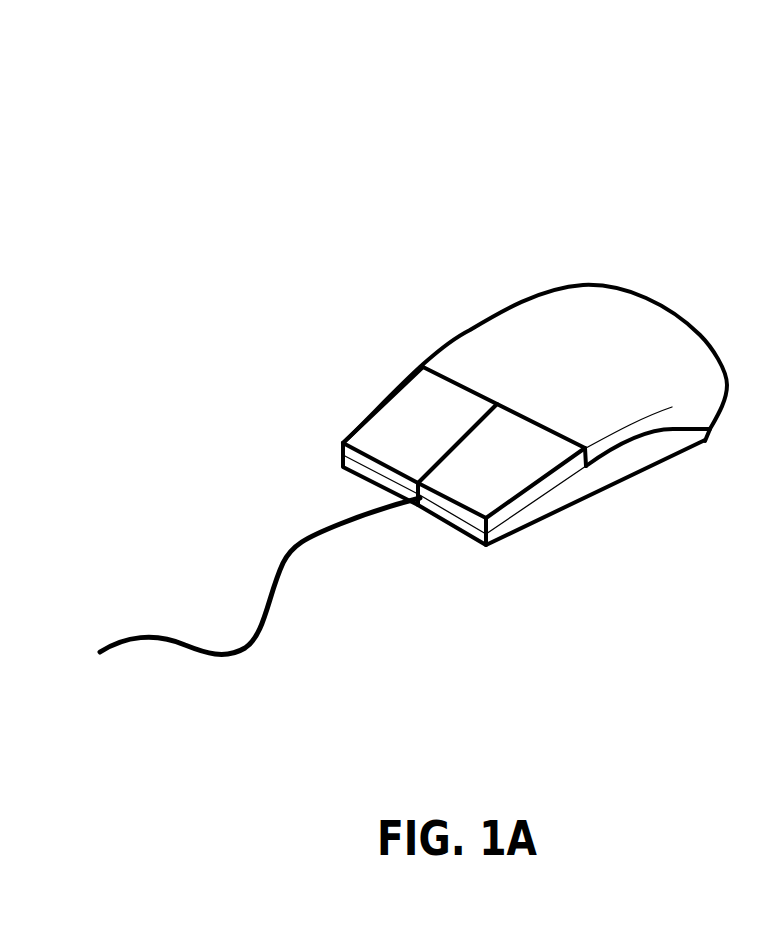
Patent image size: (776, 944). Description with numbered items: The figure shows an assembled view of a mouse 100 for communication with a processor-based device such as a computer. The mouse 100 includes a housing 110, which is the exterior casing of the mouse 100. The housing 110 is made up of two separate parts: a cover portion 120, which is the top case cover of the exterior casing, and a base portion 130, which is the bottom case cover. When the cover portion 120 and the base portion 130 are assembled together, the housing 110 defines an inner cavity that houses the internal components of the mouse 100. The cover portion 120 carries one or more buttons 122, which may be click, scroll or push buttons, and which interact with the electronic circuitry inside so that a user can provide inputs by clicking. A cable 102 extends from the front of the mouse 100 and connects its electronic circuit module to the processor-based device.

The mouse 100 is at (181, 141).
The cable 102 is at (290, 555).
The housing 110 is at (435, 348).
The cover portion 120 is at (567, 330).
The buttons 122 is at (403, 422).
The base portion 130 is at (608, 467).